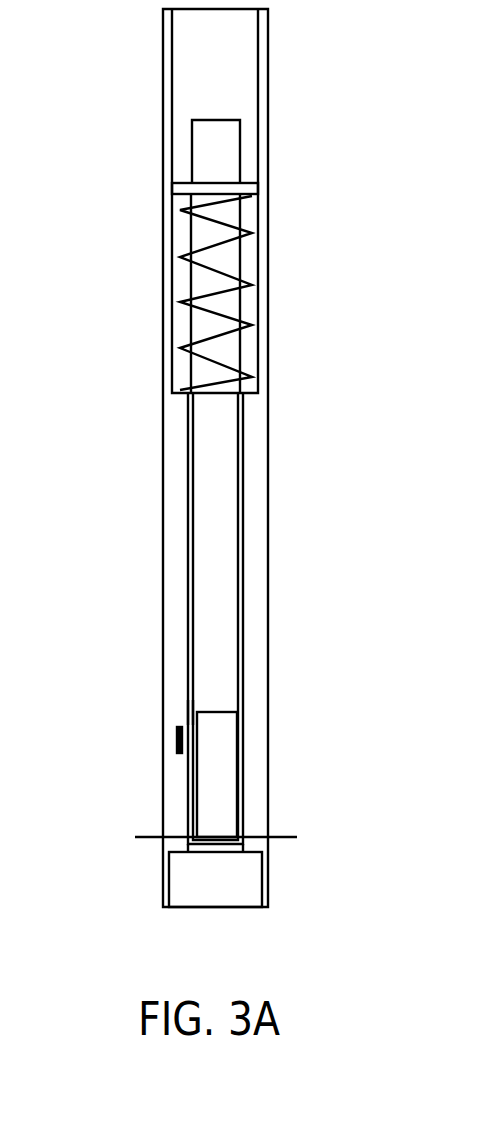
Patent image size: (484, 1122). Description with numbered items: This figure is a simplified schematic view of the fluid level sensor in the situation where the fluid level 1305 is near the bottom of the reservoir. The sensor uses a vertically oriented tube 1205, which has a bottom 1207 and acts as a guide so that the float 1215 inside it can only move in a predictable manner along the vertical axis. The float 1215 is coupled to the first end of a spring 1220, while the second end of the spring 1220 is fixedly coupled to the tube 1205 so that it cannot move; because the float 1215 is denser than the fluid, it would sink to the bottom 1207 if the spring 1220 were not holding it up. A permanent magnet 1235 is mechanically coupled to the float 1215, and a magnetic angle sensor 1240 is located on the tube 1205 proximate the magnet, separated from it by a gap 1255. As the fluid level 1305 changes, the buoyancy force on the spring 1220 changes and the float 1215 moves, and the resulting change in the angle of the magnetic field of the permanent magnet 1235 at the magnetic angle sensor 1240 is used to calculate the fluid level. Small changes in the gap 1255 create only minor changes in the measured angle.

The tube 1205 is at (163, 50).
The spring 1220 is at (183, 302).
The float 1215 is at (208, 460).
The permanent magnet 1235 is at (215, 748).
The gap 1255 is at (192, 713).
The magnetic angle sensor 1240 is at (176, 740).
The fluid level 1305 is at (147, 837).
The bottom 1207 is at (252, 851).